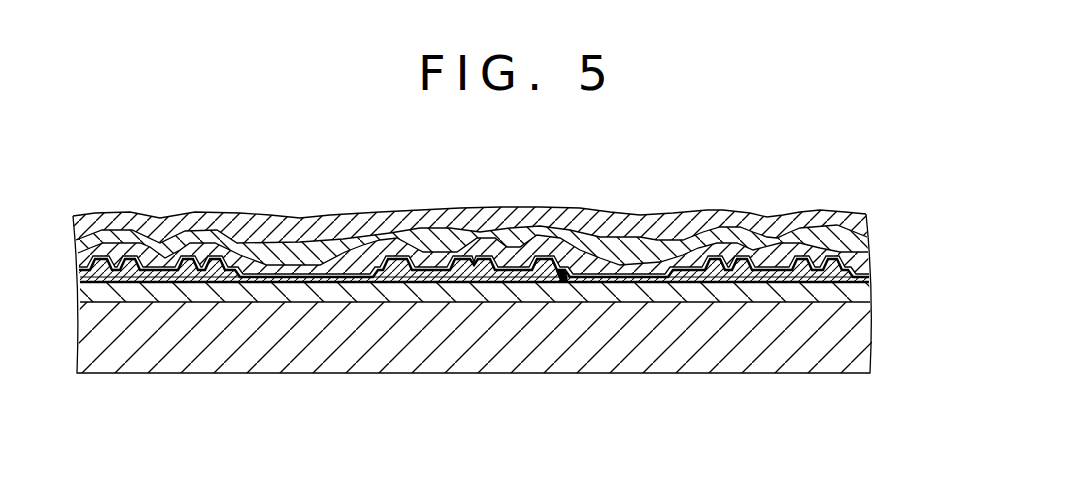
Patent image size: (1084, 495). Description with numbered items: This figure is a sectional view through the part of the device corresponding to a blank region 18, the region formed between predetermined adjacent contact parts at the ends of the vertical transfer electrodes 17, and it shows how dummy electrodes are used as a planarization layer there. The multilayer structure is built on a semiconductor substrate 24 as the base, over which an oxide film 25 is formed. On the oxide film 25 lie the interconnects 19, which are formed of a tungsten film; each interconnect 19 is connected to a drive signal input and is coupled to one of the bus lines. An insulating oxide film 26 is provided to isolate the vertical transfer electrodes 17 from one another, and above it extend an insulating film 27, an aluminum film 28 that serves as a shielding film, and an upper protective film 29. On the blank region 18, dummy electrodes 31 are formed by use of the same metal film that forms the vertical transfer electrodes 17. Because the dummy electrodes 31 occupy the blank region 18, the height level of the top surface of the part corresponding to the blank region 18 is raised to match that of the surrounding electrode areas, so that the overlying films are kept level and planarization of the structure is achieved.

The vertical transfer electrode 17 is at (861, 283).
The blank region 18 is at (578, 201).
The interconnect 19 is at (396, 243).
The semiconductor substrate 24 is at (861, 333).
The oxide film 25 is at (861, 293).
The insulating oxide film 26 is at (861, 274).
The insulating film 27 is at (861, 262).
The aluminum film 28 is at (861, 247).
The upper protective film 29 is at (867, 220).
The dummy electrode 31 is at (562, 283).